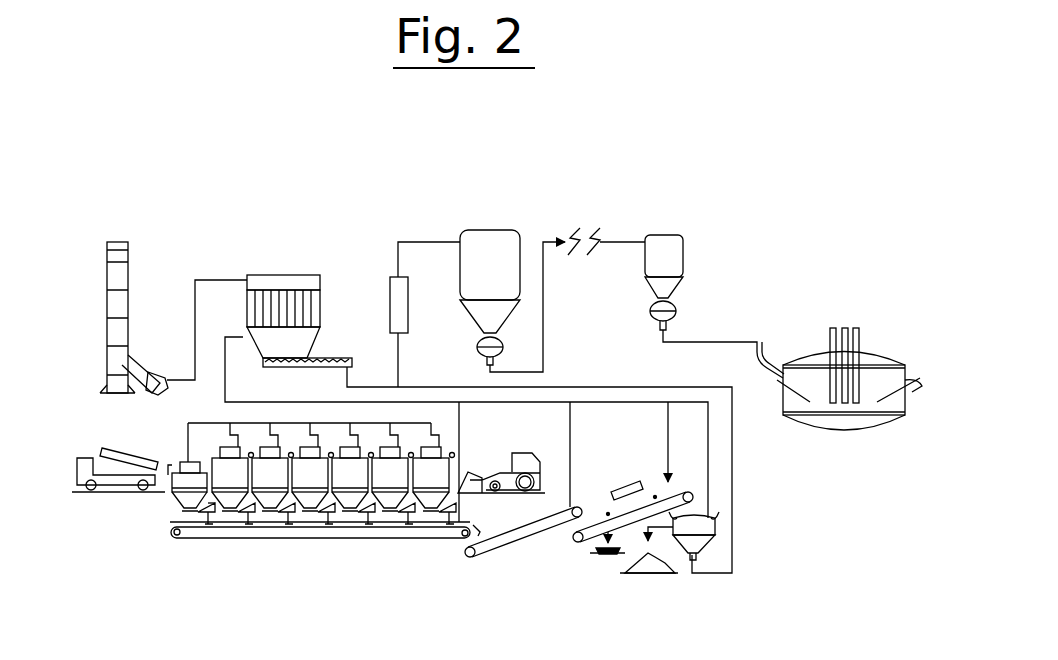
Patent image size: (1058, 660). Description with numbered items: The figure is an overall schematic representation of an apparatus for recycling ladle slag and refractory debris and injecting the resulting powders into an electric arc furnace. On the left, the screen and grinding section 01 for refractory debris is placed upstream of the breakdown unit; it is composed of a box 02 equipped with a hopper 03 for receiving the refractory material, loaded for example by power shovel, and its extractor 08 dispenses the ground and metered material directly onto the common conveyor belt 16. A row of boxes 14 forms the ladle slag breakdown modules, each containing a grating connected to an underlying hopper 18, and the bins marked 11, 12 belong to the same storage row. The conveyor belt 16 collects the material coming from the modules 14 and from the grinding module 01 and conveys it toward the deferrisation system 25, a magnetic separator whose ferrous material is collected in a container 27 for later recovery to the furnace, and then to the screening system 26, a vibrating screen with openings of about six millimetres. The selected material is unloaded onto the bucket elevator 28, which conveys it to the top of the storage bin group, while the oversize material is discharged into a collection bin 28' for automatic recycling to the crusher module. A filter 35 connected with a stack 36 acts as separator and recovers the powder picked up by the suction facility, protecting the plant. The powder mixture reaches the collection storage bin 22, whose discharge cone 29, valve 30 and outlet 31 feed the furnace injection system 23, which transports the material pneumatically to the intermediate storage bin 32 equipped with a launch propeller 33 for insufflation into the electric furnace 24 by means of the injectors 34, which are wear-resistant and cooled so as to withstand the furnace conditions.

The module 01 is at (127, 533).
The box 02 is at (170, 492).
The hopper 03 is at (178, 502).
The extractor/metering device 08 is at (193, 515).
The storage bin 11 is at (245, 457).
The storage bin 12 is at (277, 467).
The box 14 is at (215, 447).
The common conveyor belt 16 is at (413, 530).
The hopper 18 is at (262, 511).
The collection storage bin 22 is at (487, 263).
The furnace injection system 23 is at (632, 222).
The electric furnace 24 is at (870, 360).
The deferrisation system 25 is at (672, 487).
The screening system 26 is at (715, 538).
The container 27 is at (605, 555).
The bucket elevator 28 is at (408, 306).
The collection bin 28' is at (649, 587).
The discharge cone 29 is at (503, 310).
The discharge valve 30 is at (477, 342).
The outlet 31 is at (488, 362).
The intermediate storage bin 32 is at (683, 240).
The launch propeller 33 is at (655, 318).
The injectors 34 is at (777, 393).
The filter 35 is at (277, 307).
The stack 36 is at (115, 245).